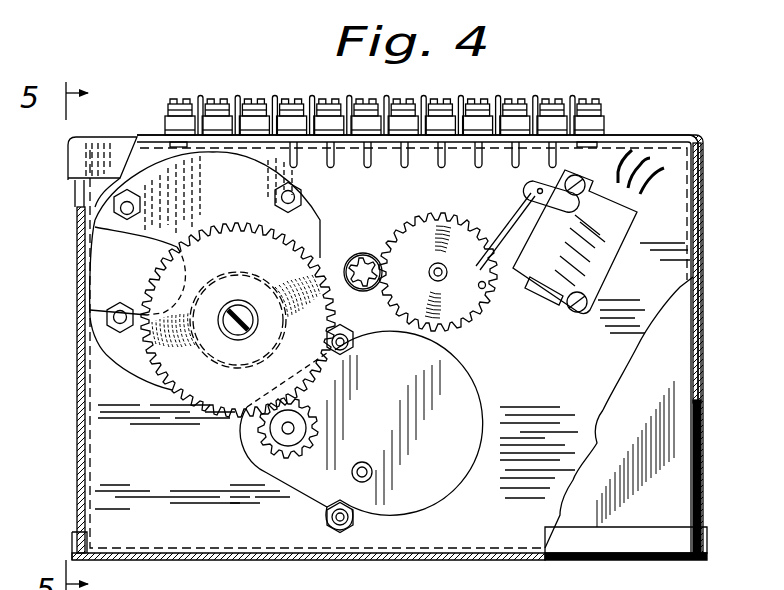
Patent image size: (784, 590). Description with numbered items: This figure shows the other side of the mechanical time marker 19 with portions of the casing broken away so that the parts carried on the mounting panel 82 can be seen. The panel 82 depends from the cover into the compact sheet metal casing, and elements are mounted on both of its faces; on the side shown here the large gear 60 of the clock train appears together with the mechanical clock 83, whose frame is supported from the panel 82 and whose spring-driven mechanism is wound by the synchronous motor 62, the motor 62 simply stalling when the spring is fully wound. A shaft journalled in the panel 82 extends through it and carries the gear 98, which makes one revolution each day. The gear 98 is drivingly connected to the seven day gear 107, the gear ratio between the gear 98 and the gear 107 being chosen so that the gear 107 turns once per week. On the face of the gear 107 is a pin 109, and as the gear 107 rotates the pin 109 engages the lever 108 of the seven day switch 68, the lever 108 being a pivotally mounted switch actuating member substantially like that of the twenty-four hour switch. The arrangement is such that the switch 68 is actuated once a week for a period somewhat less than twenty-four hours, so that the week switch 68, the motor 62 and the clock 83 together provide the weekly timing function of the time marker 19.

The mechanical time marker 19 is at (705, 272).
The gear 60 is at (140, 355).
The synchronous motor 62 is at (394, 424).
The seven day switch 68 is at (598, 252).
The mounting panel 82 is at (170, 462).
The mechanical clock 83 is at (254, 204).
The gear 98 is at (363, 254).
The seven day gear 107 is at (460, 192).
The lever 108 is at (507, 240).
The pin 109 is at (484, 289).